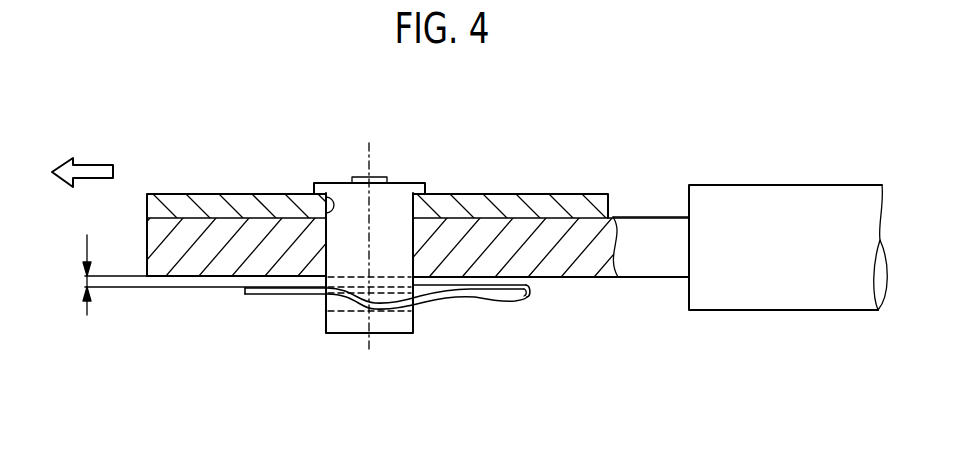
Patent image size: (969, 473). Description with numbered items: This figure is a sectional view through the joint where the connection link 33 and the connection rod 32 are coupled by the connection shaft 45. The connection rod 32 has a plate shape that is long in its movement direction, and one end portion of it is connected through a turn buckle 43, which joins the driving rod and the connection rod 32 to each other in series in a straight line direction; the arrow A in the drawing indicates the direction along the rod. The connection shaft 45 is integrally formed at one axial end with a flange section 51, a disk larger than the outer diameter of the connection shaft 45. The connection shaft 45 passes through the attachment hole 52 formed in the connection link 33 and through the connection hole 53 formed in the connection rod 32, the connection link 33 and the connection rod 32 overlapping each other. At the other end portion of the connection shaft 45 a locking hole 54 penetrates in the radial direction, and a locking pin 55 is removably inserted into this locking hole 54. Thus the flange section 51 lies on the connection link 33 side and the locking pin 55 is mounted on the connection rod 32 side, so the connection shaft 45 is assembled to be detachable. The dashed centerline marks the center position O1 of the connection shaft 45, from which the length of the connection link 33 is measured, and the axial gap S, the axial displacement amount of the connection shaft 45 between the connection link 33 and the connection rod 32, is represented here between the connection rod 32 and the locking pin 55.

The connection rod 32 is at (650, 217).
The connection link 33 is at (165, 194).
The turn buckle 43 is at (785, 297).
The connection shaft 45 is at (415, 328).
The flange section 51 is at (410, 185).
The attachment hole 52 is at (337, 184).
The connection hole 53 is at (323, 270).
The locking hole 54 is at (381, 305).
The locking pin 55 is at (530, 298).
The center position of the connection shaft O1 is at (371, 158).
The axial gap S is at (73, 275).
The direction arrow A is at (90, 160).